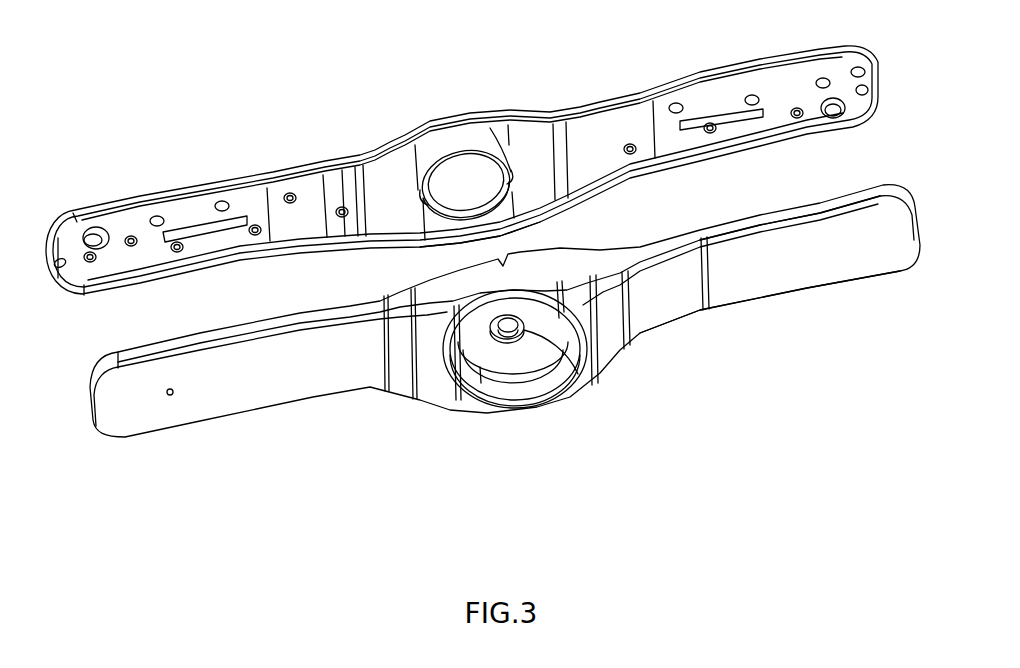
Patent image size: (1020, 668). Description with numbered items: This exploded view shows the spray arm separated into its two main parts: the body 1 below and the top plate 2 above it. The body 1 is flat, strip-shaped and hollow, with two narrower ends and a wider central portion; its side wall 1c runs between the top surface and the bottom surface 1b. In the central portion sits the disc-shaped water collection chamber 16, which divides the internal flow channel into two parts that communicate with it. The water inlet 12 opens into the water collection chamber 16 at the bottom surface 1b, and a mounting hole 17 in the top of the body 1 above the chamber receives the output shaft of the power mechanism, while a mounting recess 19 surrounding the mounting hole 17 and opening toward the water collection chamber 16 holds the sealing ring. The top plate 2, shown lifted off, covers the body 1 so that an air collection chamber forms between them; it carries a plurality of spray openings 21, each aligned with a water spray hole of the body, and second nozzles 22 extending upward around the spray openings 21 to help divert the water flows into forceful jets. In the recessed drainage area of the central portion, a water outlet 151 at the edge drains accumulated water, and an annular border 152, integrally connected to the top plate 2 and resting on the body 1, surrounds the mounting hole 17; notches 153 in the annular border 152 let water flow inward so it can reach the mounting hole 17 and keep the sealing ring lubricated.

The body 1 is at (505, 318).
The bottom surface 1b is at (791, 280).
The side wall 1c is at (868, 196).
The top plate 2 is at (462, 149).
The water inlet 12 is at (543, 385).
The water collection chamber 16 is at (497, 378).
The mounting hole 17 is at (512, 316).
The mounting recess 19 is at (578, 374).
The spray openings 21 is at (157, 218).
The second nozzles 22 is at (222, 203).
The water outlet 151 is at (518, 223).
The annular border 152 is at (468, 152).
The notches 153 is at (421, 195).